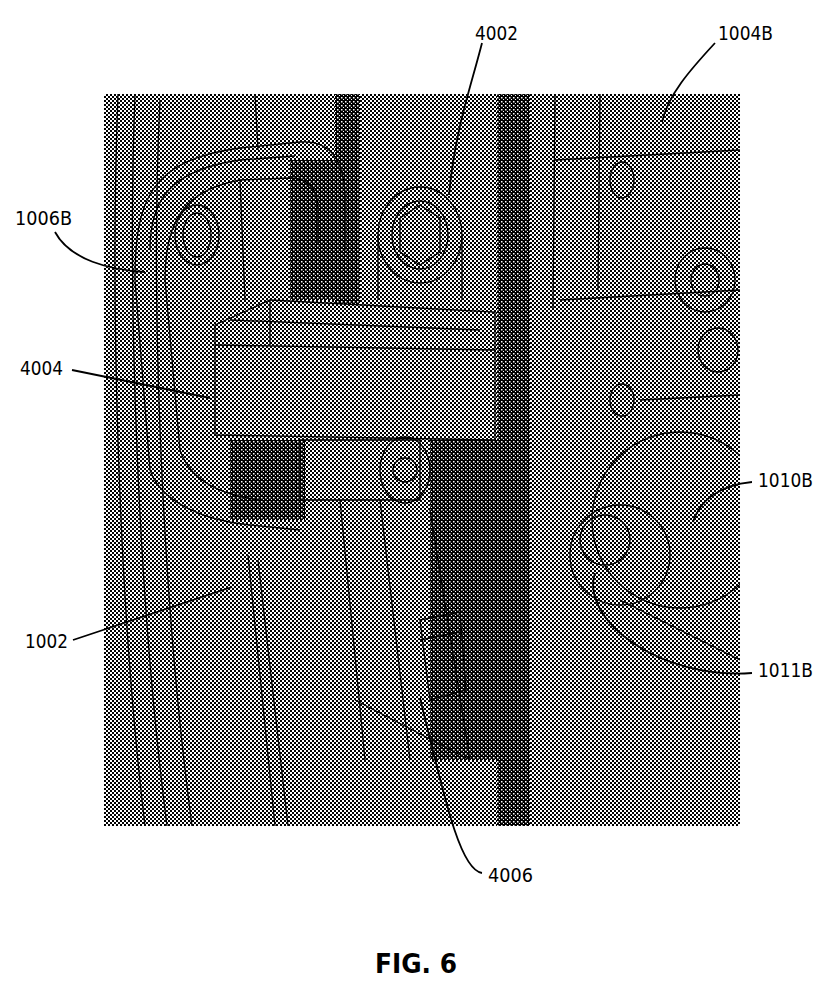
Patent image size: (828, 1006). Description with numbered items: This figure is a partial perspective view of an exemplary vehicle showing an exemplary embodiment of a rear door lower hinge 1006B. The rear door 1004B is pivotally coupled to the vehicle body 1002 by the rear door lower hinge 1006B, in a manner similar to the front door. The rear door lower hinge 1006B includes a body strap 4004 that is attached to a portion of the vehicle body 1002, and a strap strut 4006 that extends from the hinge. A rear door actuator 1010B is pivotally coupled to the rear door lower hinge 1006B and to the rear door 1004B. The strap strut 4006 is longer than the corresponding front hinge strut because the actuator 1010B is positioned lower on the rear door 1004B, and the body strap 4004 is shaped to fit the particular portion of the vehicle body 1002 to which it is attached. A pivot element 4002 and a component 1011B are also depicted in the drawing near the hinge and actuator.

The vehicle body 1002 is at (232, 587).
The rear door 1004B is at (662, 122).
The rear door lower hinge 1006B is at (145, 272).
The pivot bolt 4002 is at (449, 195).
The body strap 4004 is at (210, 398).
The strap strut 4006 is at (420, 698).
The rear door actuator 1010B is at (693, 522).
The latch pin 1011B is at (595, 573).